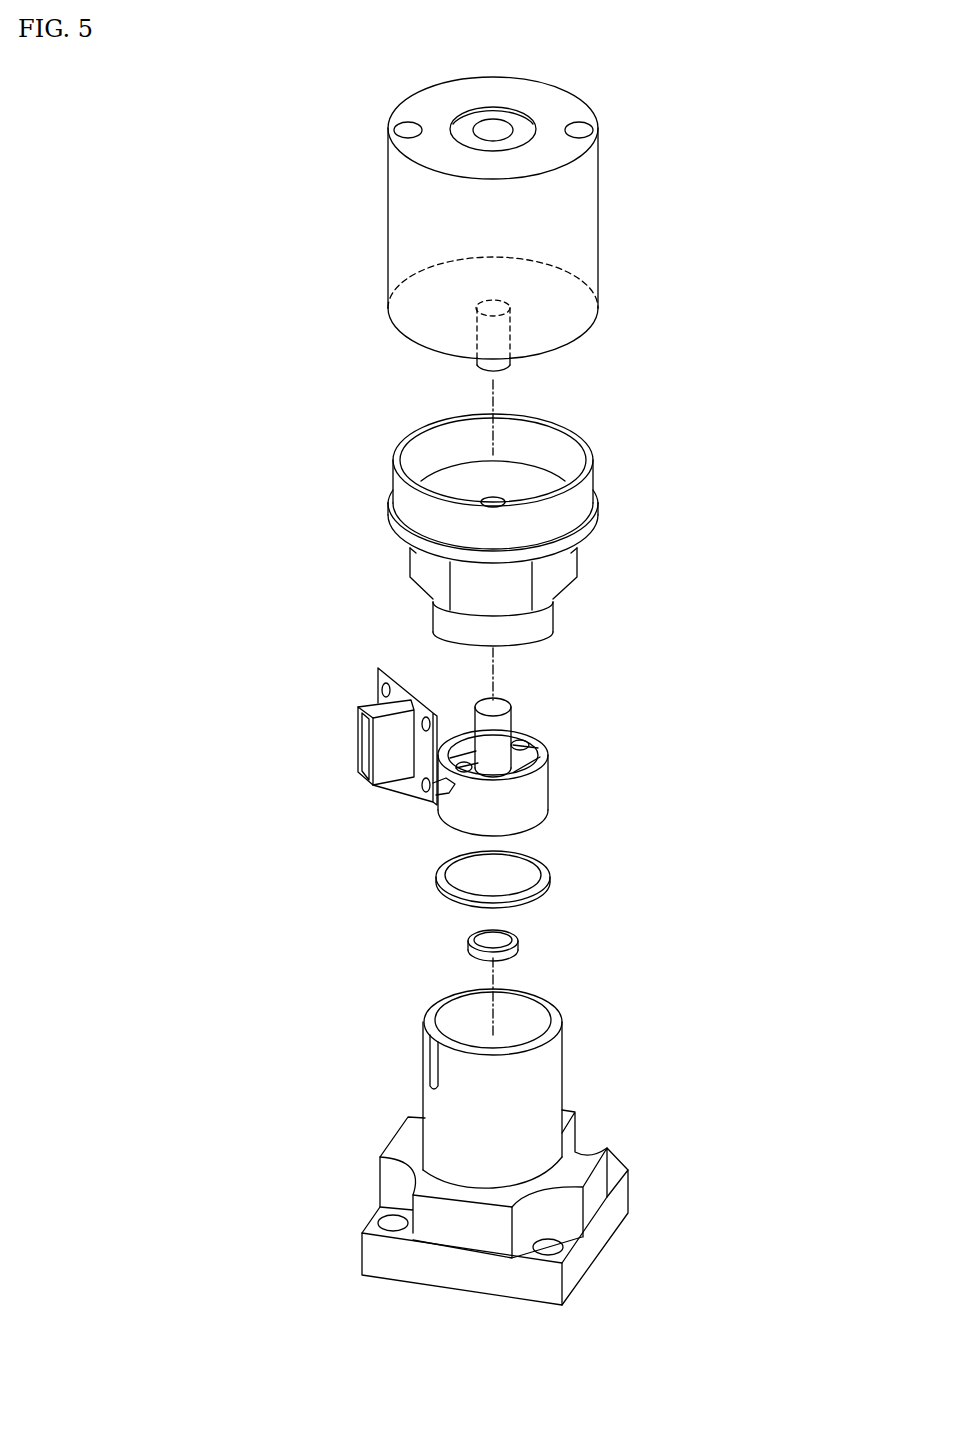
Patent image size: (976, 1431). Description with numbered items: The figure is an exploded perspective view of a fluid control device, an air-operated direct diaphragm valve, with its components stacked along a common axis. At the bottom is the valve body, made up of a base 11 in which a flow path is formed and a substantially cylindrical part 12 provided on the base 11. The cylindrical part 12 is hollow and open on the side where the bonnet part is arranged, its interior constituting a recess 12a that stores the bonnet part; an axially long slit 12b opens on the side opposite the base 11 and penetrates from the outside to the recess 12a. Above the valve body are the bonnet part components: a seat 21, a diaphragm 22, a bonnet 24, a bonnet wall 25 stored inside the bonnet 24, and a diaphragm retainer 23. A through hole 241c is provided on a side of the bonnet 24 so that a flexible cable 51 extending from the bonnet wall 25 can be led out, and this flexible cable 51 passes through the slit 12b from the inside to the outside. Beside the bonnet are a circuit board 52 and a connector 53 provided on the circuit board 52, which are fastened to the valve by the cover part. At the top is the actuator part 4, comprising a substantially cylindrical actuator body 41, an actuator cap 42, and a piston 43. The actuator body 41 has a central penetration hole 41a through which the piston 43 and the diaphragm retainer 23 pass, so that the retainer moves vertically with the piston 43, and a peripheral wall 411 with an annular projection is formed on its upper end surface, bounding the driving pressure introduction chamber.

The actuator part 4 is at (577, 224).
The actuator cap 42 is at (598, 219).
The piston 43 is at (512, 358).
The actuator body 41 is at (509, 510).
The penetration hole 41a is at (493, 501).
The peripheral wall 411 is at (395, 490).
The circuit board 52 is at (378, 668).
The connector 53 is at (357, 742).
The flexible cable 51 is at (436, 798).
The diaphragm retainer 23 is at (516, 704).
The bonnet 24 is at (557, 749).
The bonnet wall 25 is at (530, 750).
The through hole 241c is at (474, 776).
The diaphragm 22 is at (551, 880).
The seat 21 is at (467, 946).
The cylindrical part 12 is at (497, 1081).
The recess 12a is at (545, 1033).
The slit 12b is at (428, 1052).
The base 11 is at (603, 1243).